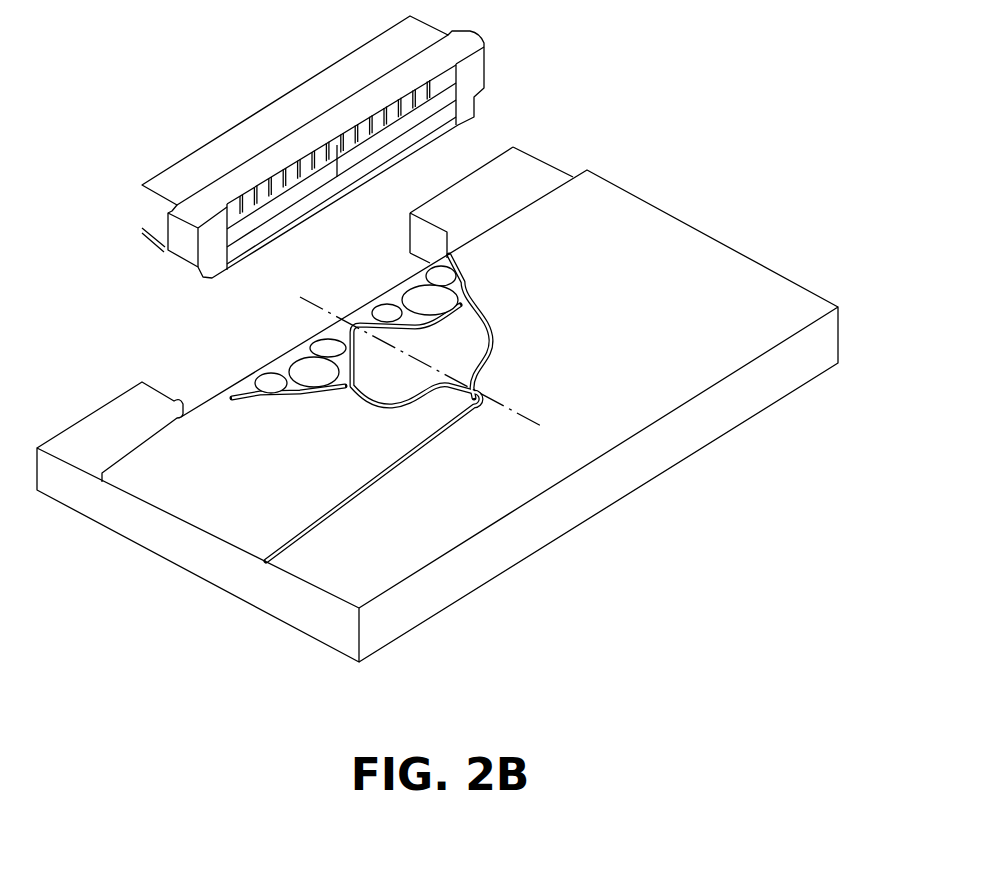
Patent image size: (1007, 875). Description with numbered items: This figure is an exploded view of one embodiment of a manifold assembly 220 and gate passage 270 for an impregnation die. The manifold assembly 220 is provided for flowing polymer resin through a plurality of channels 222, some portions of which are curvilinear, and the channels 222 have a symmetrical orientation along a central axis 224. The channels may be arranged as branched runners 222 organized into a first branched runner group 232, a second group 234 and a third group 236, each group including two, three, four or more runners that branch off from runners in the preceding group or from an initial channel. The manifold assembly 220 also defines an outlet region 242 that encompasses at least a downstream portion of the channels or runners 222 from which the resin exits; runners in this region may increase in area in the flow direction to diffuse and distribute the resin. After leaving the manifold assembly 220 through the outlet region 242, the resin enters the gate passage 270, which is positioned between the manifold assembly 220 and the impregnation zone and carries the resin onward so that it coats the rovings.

The manifold assembly 220 is at (502, 385).
The channels 222 is at (457, 265).
The central axis 224 is at (548, 428).
The first branched runner group 232 is at (355, 405).
The second branched runner group 234 is at (297, 402).
The third branched runner group 236 is at (253, 398).
The outlet region 242 is at (380, 290).
The gate passage 270 is at (403, 125).